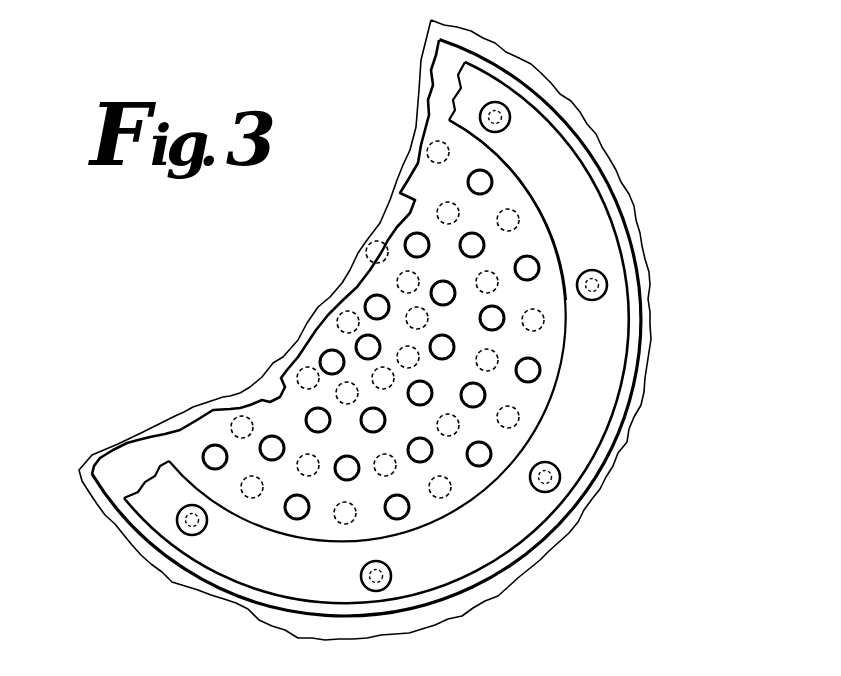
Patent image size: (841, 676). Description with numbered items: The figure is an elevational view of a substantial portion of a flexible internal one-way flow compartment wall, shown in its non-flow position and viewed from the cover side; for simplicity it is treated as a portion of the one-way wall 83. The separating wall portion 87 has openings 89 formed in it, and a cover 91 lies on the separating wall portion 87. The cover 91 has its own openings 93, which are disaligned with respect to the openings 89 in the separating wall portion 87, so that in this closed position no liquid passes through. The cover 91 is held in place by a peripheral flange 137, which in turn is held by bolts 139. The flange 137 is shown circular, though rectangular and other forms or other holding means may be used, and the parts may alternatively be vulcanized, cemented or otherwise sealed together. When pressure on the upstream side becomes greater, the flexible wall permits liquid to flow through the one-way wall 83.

The one-way wall 83 is at (512, 58).
The separating wall portion 87 is at (505, 190).
The openings 89 is at (432, 146).
The cover 91 is at (535, 236).
The openings 93 is at (368, 298).
The peripheral flange 137 is at (604, 242).
The bolts 139 is at (560, 475).